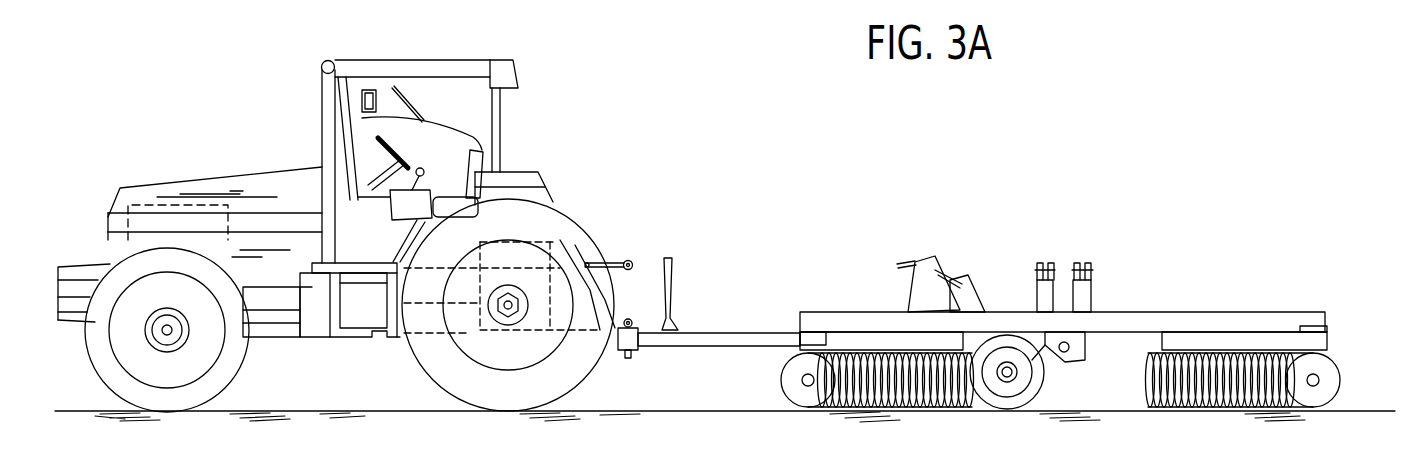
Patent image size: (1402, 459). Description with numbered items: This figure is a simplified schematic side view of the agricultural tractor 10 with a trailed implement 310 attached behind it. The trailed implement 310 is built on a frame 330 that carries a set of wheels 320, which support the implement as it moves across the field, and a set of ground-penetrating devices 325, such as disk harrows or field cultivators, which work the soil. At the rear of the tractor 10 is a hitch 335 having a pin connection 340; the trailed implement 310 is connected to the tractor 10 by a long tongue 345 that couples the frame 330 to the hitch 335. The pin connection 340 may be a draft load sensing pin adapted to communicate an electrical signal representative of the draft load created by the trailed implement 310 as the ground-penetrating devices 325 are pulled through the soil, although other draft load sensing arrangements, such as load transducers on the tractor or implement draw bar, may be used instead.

The tractor 10 is at (256, 130).
The trailed implement 310 is at (1116, 293).
The set of wheels 320 is at (1008, 402).
The set of ground-penetrating devices 325 is at (798, 378).
The frame 330 is at (1296, 320).
The hitch 335 is at (634, 347).
The pin connection 340 is at (632, 322).
The long tongue 345 is at (710, 333).